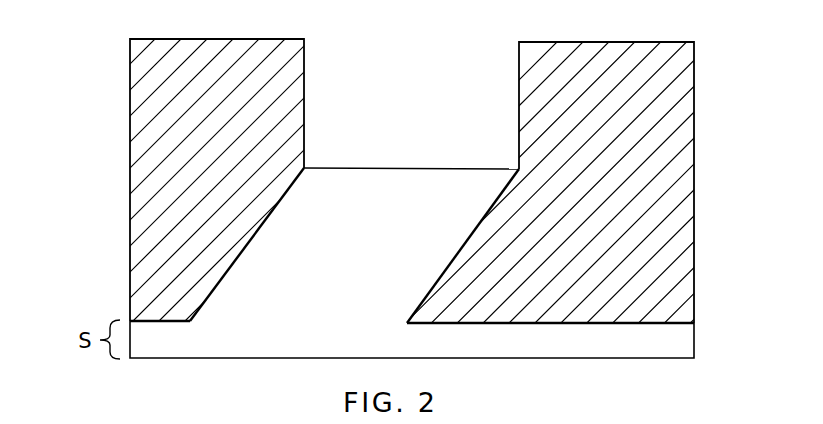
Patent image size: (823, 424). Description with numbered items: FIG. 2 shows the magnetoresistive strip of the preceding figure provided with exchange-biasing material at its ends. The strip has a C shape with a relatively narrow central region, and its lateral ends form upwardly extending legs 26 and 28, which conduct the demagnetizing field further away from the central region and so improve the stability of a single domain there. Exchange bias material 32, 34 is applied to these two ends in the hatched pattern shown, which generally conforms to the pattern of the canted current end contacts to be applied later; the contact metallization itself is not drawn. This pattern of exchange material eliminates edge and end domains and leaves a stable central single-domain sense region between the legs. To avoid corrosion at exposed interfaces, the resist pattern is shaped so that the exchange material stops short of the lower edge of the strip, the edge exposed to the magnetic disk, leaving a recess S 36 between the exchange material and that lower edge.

The upwardly extending leg 26 is at (155, 70).
The upwardly extending leg 28 is at (627, 107).
The exchange bias material 32 is at (153, 168).
The exchange bias material 34 is at (652, 228).
The recess 36 is at (160, 349).